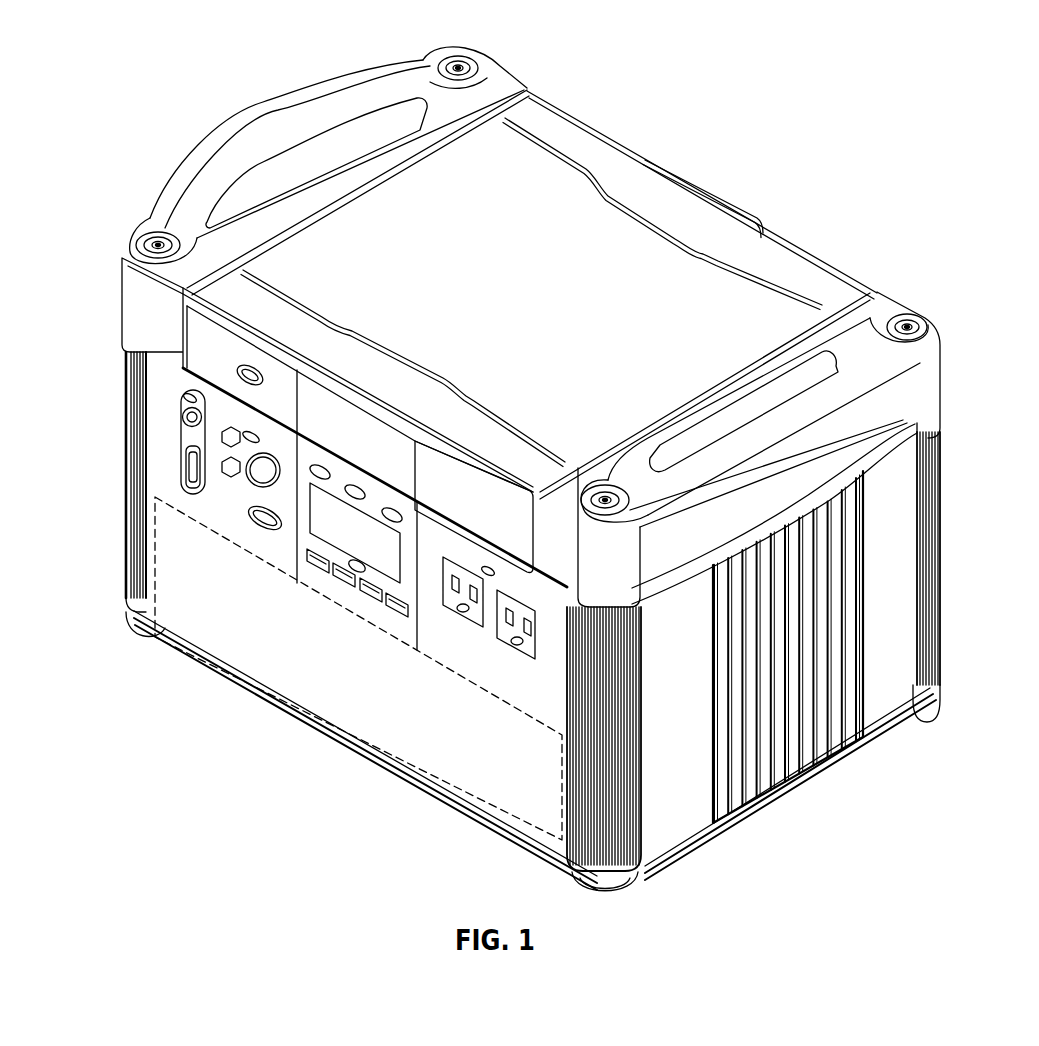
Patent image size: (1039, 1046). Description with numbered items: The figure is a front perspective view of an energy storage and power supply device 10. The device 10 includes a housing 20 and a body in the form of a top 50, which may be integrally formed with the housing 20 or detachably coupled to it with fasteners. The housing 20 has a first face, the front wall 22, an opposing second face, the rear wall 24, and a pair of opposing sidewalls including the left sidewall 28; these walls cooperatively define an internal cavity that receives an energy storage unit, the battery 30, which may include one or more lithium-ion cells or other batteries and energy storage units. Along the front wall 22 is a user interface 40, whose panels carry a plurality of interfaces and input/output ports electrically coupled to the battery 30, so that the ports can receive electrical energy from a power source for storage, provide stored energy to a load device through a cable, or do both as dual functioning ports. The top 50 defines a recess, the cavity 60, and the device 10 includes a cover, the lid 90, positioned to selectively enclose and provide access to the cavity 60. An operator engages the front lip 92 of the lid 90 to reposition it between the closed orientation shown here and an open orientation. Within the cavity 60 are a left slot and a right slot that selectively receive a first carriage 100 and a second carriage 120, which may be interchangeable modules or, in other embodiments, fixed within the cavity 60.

The energy storage and power supply device 10 is at (110, 110).
The housing 20 is at (207, 668).
The front wall 22 is at (118, 558).
The rear wall 24 is at (952, 432).
The left sidewall 28 is at (902, 627).
The battery 30 is at (376, 765).
The user interface 40 is at (323, 590).
The top 50 is at (118, 316).
The cavity 60 is at (868, 308).
The lid 90 is at (547, 188).
The front lip 92 is at (372, 418).
The first carriage 100 is at (486, 506).
The second carriage 120 is at (200, 364).